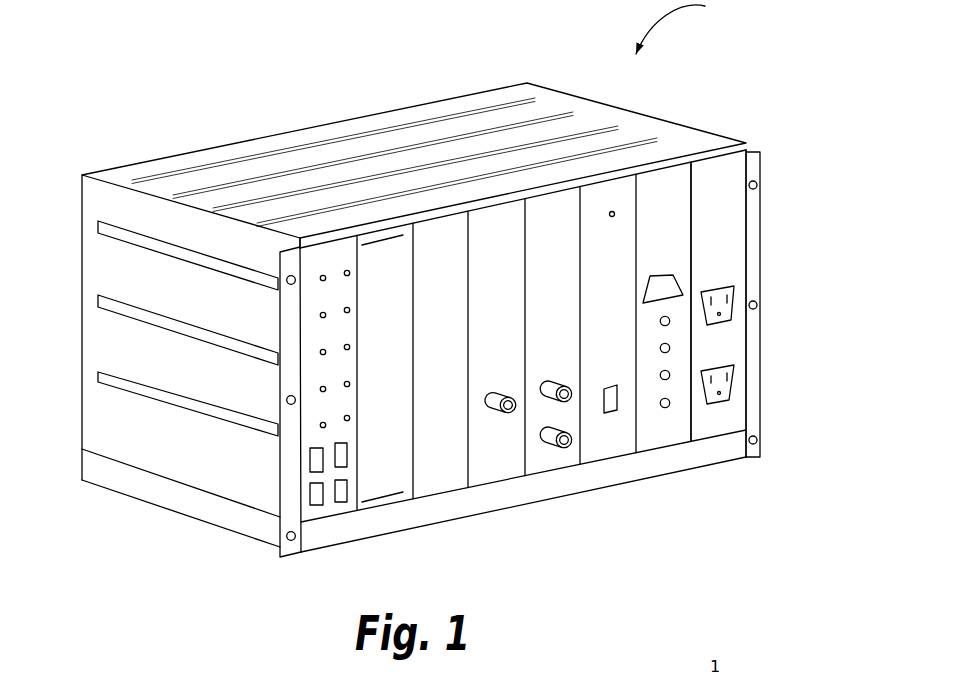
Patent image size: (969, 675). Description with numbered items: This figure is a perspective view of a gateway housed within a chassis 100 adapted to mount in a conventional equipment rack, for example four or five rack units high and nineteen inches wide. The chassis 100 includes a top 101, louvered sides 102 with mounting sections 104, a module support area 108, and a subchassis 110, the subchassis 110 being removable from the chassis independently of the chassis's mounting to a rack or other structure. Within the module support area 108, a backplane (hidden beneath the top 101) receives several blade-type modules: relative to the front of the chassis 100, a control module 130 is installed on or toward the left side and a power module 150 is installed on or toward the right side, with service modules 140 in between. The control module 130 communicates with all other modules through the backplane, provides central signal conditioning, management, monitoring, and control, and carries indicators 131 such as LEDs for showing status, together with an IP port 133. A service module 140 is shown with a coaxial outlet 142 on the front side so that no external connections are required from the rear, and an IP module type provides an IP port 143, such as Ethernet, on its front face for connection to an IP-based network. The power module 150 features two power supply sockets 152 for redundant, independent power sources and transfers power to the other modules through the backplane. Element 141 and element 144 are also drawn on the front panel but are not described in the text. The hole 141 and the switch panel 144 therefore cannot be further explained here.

The chassis 100 is at (175, 495).
The top 101 is at (505, 90).
The louvered sides 102 is at (145, 462).
The mounting sections 104 is at (283, 487).
The module support area 108 is at (383, 466).
The subchassis 110 is at (724, 455).
The control module 130 is at (323, 244).
The indicators 131 is at (330, 359).
The IP port 133 is at (341, 502).
The service modules 140 is at (643, 537).
The front panel hole 141 is at (612, 211).
The coaxial outlet 142 is at (549, 400).
The IP port 143 is at (610, 414).
The switch and indicator panel 144 is at (665, 418).
The power module 150 is at (721, 182).
The power supply sockets 152 is at (732, 293).